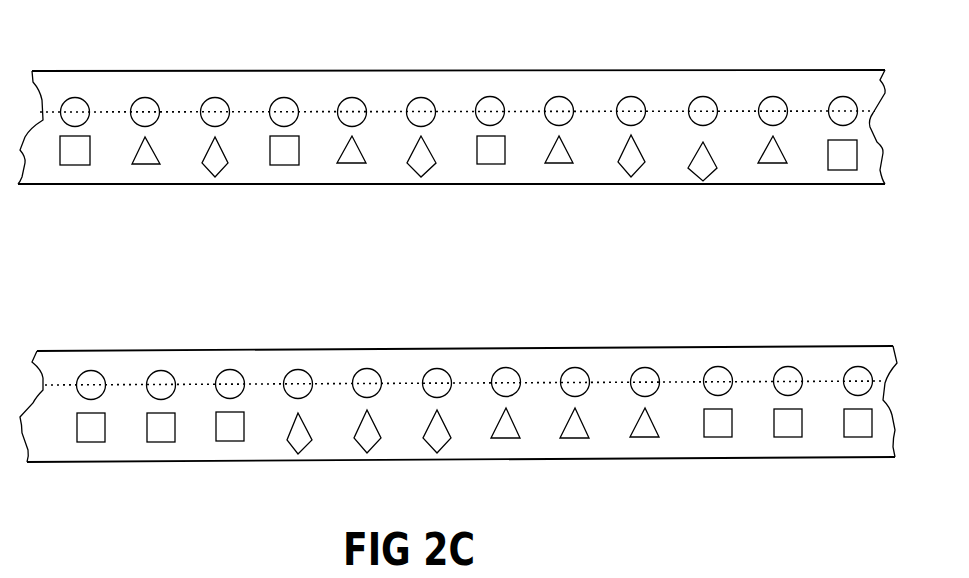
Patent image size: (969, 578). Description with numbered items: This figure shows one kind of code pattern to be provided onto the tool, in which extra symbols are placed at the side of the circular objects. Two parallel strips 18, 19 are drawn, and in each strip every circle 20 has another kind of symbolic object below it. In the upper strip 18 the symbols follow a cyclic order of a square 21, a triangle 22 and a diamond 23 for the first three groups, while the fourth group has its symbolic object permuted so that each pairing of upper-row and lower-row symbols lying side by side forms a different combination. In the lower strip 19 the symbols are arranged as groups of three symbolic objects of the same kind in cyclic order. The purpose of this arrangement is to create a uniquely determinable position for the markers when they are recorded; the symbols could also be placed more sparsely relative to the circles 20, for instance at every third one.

The first parallel strip 18 is at (188, 184).
The second parallel strip 19 is at (161, 357).
The circle 20 is at (75, 106).
The square 21 is at (282, 165).
The triangle 22 is at (352, 163).
The diamond 23 is at (435, 164).